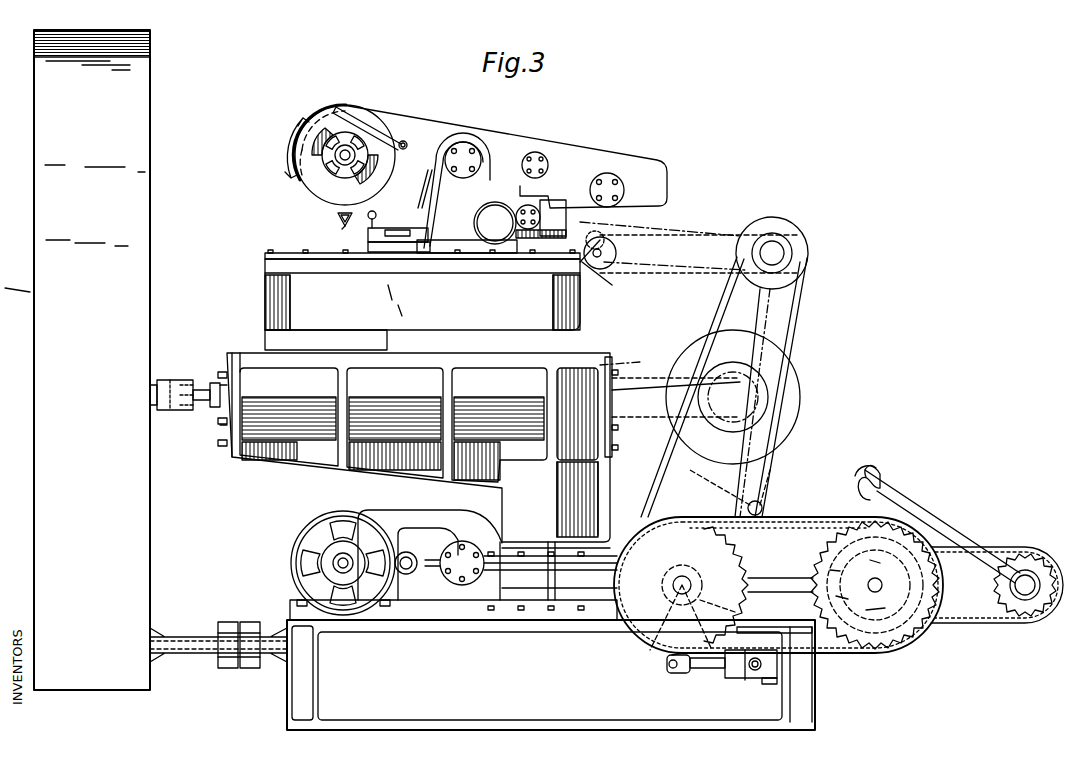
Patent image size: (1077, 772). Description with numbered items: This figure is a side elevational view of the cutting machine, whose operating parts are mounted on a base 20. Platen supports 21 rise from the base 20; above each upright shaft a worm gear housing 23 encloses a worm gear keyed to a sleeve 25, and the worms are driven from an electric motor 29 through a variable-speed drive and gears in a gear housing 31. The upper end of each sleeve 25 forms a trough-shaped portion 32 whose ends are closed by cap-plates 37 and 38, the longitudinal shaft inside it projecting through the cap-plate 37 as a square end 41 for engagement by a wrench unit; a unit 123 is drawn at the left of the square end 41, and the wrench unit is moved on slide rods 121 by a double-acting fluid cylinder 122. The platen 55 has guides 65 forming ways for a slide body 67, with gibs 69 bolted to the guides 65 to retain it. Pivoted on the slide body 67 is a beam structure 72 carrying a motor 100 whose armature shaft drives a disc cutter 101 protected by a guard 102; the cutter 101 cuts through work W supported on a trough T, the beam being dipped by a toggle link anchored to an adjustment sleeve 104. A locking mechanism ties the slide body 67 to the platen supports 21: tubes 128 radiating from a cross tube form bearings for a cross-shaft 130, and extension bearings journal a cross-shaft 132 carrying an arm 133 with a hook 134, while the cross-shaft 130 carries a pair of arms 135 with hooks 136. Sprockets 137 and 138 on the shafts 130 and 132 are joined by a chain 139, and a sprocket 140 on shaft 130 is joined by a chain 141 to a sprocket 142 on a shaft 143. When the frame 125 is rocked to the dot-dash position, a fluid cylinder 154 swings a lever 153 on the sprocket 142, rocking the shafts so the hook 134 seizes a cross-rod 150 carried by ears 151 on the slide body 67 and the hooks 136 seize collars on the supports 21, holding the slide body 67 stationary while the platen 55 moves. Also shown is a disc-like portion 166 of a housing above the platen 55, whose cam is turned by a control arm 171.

The base 20 is at (282, 714).
The platen support 21 is at (384, 464).
The worm gear housing 23 is at (534, 586).
The sleeve 25 is at (530, 494).
The electric motor 29 is at (311, 536).
The gear housing 31 is at (417, 517).
The trough-shaped portion 32 is at (309, 425).
The cap-plate 37 is at (230, 438).
The cap-plate 38 is at (613, 433).
The square end 41 is at (205, 401).
The platen 55 is at (256, 301).
The guide 65 is at (265, 271).
The slide body 67 is at (472, 209).
The gib 69 is at (265, 256).
The beam structure 72 is at (418, 114).
The motor 100 is at (368, 128).
The disc cutter 101 is at (304, 172).
The guard 102 is at (330, 112).
The adjustment sleeve 104 is at (556, 218).
The slide rod 121 is at (205, 655).
The fluid cylinder 122 is at (249, 670).
The gear unit 123 is at (170, 384).
The frame 125 is at (799, 597).
The tube 128 is at (777, 580).
The cross-shaft 130 is at (880, 593).
The cross-shaft 132 is at (1030, 577).
The arm 133 is at (700, 227).
The hook 134 is at (870, 470).
The arm 135 is at (636, 362).
The hook 136 is at (756, 500).
The sprocket 137 is at (860, 633).
The sprocket 138 is at (1030, 613).
The chain 139 is at (969, 626).
The sprocket 140 is at (858, 633).
The chain 141 is at (810, 517).
The sprocket 142 is at (651, 621).
The shaft 143 is at (686, 580).
The cross-rod 150 is at (601, 258).
The ear 151 is at (588, 270).
The lever 153 is at (672, 656).
The fluid cylinder 154 is at (738, 678).
The disc-like portion 166 is at (410, 240).
The control arm 171 is at (375, 216).
The work W is at (338, 216).
The trough T is at (342, 226).